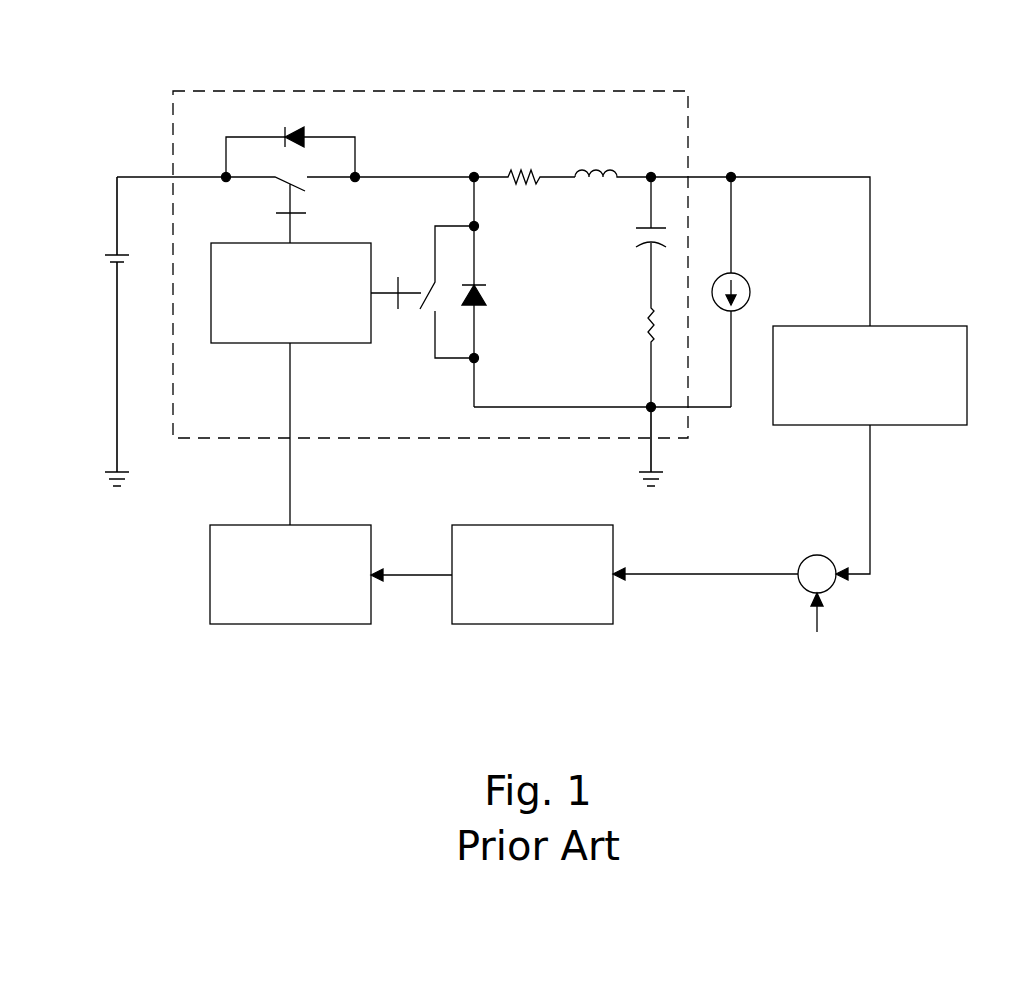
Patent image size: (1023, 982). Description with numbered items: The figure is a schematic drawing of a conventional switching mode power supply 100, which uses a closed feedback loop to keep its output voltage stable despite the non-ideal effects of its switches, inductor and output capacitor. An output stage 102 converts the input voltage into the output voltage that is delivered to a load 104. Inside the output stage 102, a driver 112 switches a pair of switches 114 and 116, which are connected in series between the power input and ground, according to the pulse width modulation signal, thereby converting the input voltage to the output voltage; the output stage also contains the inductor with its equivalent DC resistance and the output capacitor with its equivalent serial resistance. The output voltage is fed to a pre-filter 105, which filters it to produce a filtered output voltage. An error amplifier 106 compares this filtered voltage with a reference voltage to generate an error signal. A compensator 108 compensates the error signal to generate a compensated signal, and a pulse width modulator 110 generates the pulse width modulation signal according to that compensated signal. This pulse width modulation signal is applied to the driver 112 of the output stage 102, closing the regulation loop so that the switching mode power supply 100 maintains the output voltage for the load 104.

The switching mode power supply 100 is at (894, 102).
The output stage 102 is at (430, 90).
The load 104 is at (745, 278).
The pre-filter 105 is at (918, 326).
The error amplifier 106 is at (818, 555).
The compensator 108 is at (532, 624).
The pulse width modulator 110 is at (290, 624).
The driver 112 is at (260, 343).
The switch 114 is at (320, 190).
The switch 116 is at (422, 320).